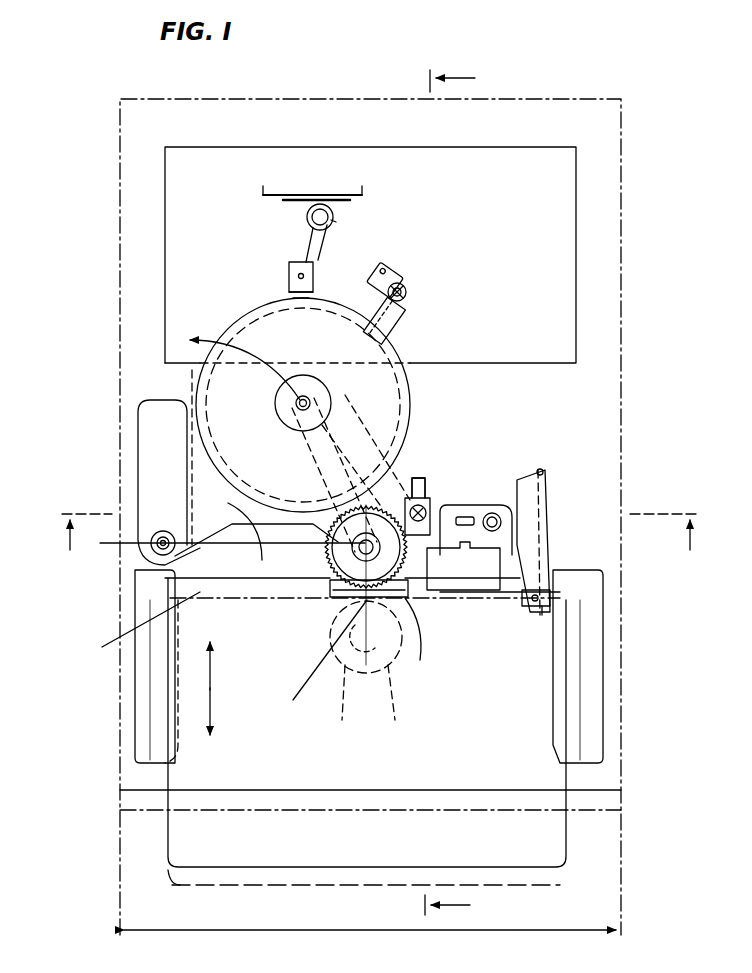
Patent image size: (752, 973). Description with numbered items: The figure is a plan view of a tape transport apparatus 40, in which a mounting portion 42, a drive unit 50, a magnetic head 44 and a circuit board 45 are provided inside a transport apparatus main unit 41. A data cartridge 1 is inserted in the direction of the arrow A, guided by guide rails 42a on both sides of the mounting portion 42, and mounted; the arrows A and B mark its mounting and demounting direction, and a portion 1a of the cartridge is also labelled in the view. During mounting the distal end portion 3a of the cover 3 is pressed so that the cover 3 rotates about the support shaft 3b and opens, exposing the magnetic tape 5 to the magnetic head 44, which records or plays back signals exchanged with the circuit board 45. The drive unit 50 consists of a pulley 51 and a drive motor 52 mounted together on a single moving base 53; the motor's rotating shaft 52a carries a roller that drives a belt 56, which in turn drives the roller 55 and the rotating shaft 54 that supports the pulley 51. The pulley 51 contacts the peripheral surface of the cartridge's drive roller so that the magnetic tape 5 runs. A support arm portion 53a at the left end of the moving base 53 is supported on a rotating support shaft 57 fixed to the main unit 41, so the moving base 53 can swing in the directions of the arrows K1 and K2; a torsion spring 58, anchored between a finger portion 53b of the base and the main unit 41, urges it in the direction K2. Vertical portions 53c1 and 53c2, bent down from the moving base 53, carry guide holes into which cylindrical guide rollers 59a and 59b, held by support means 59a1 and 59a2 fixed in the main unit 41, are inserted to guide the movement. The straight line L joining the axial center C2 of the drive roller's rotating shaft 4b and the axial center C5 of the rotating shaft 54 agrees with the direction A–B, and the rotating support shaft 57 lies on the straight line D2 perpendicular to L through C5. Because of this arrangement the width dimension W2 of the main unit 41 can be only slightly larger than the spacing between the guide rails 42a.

The tape transport apparatus 40 is at (605, 72).
The transport apparatus main unit 41 is at (621, 280).
The circuit board 45 is at (548, 185).
The torsion spring 58 is at (335, 217).
The finger portion 53b is at (290, 272).
The support means 59a2 is at (404, 260).
The guide roller 59b is at (405, 290).
The vertical portion 53c2 is at (402, 318).
The drive unit 50 is at (415, 395).
The drive motor 52 is at (197, 402).
The rotating shaft 52a is at (297, 410).
The arrow K1 is at (238, 354).
The arrow K2 is at (318, 393).
The belt 56 is at (345, 410).
The roller 55 is at (352, 420).
The axial center C5 is at (352, 535).
The support arm portion 53a is at (148, 460).
The rotating support shaft 57 is at (168, 558).
The moving base 53 is at (262, 528).
The guide portion 1a is at (228, 521).
The straight line D2 is at (139, 633).
The pulley 51 is at (333, 568).
The rotating shaft 54 is at (340, 595).
The rotating shaft 4b is at (356, 660).
The axial center C2 is at (372, 645).
The straight line L is at (330, 666).
The guide roller 59a is at (438, 494).
The vertical portion 53c1 is at (422, 478).
The magnetic head 44 is at (490, 562).
The cover 3 is at (533, 472).
The support means 59a1 is at (548, 425).
The support shaft 3b is at (518, 610).
The distal end portion 3a is at (540, 618).
The magnetic tape 5 is at (415, 635).
The mounting portion 42 is at (232, 775).
The guide rail 42a is at (155, 748).
The data cartridge 1 is at (570, 860).
The dimension W2 is at (370, 914).
The arrow A is at (222, 662).
The arrow B is at (222, 714).